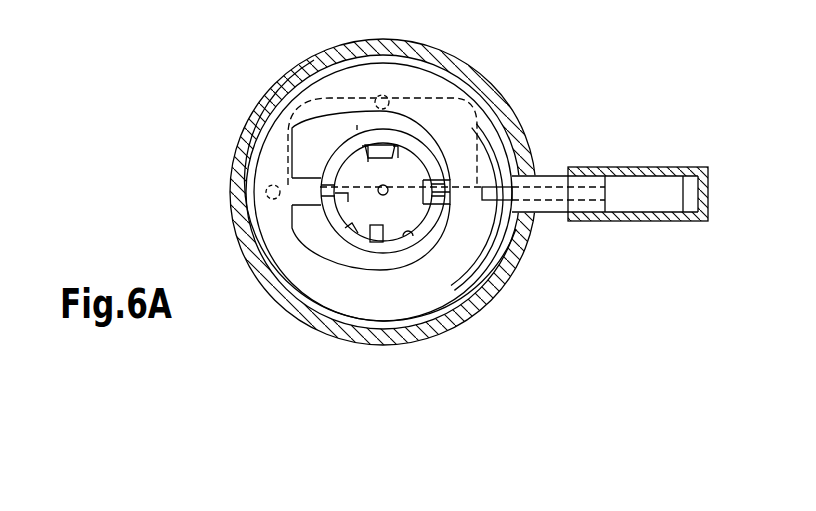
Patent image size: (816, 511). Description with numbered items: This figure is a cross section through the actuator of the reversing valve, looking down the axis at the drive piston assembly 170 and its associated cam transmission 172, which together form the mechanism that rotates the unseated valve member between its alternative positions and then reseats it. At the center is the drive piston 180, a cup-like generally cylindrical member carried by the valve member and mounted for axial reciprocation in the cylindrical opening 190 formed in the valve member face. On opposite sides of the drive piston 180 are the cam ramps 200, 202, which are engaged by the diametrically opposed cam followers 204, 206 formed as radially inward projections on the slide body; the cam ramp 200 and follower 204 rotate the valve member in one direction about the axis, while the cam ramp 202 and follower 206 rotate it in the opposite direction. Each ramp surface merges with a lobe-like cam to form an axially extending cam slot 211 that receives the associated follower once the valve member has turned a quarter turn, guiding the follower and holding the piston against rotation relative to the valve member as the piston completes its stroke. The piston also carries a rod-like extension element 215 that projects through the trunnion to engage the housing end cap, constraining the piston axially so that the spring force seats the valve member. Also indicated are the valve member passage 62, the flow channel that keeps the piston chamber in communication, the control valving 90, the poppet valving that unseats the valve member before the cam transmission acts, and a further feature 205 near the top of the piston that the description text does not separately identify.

The valve member passage 62 is at (451, 123).
The control valving 90 is at (376, 100).
The drive piston assembly 170 is at (383, 241).
The cam transmission 172 is at (452, 214).
The drive piston 180 is at (403, 219).
The cylindrical opening 190 is at (468, 322).
The cam ramp 200 is at (420, 215).
The cam ramp 202 is at (323, 146).
The cam follower 204 is at (390, 187).
The key 205 is at (381, 138).
The cam follower 206 is at (307, 218).
The axially extending cam slot 211 is at (357, 127).
The rod-like extension element 215 is at (436, 184).